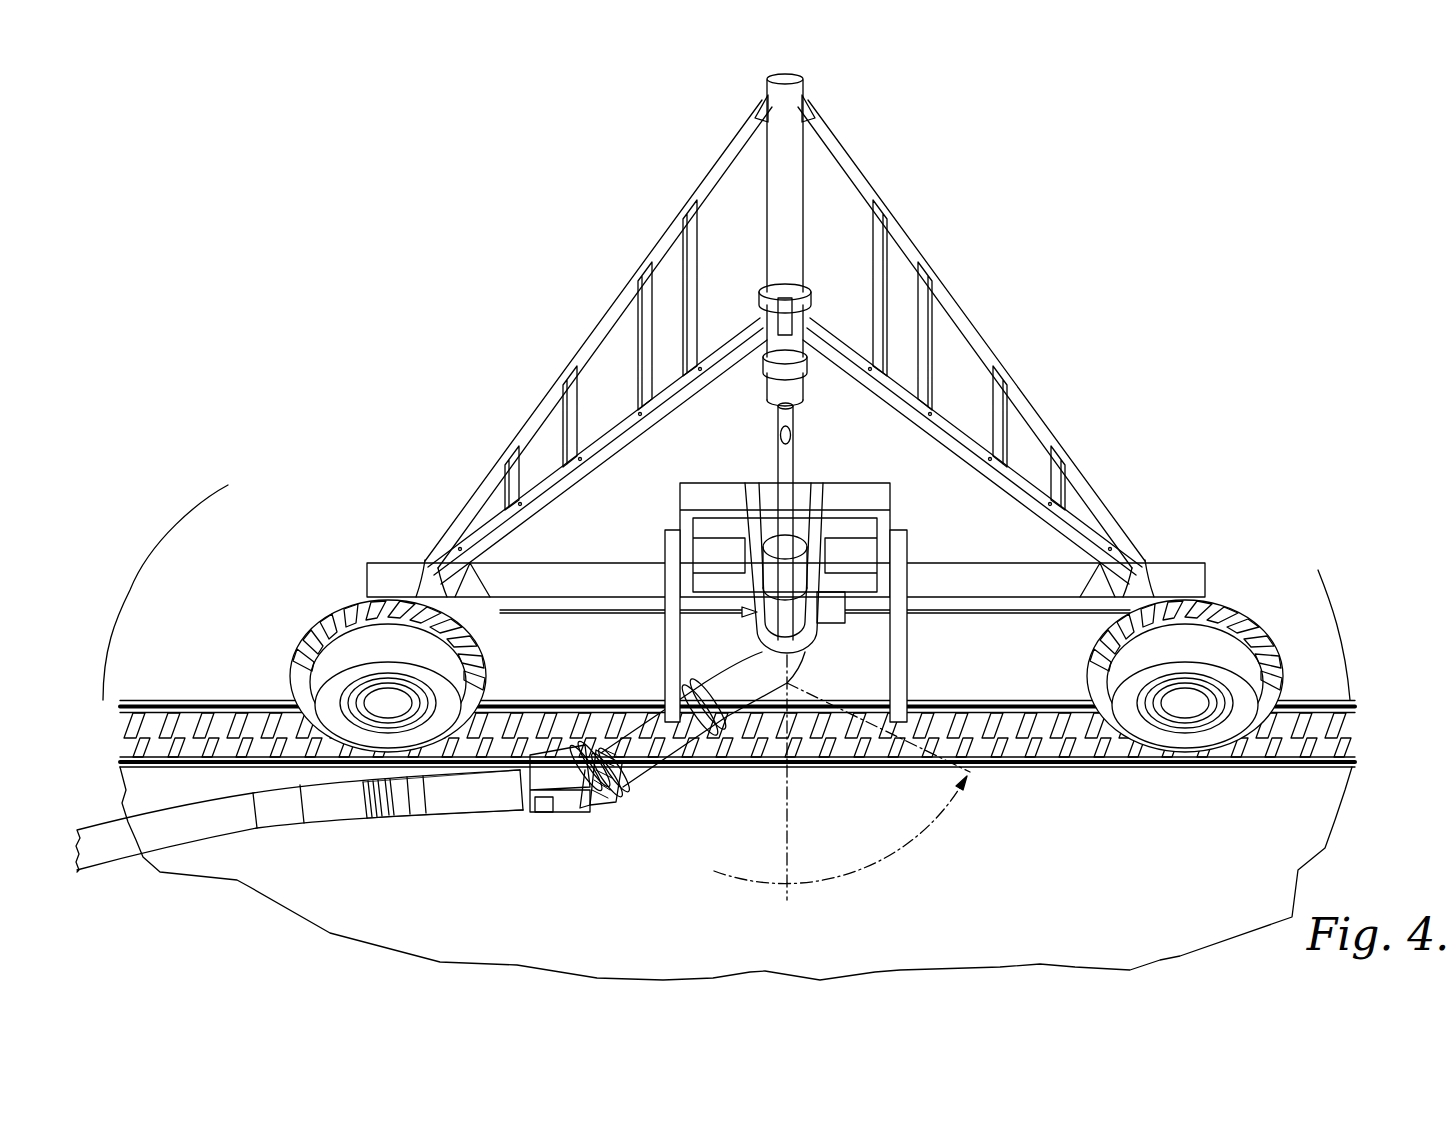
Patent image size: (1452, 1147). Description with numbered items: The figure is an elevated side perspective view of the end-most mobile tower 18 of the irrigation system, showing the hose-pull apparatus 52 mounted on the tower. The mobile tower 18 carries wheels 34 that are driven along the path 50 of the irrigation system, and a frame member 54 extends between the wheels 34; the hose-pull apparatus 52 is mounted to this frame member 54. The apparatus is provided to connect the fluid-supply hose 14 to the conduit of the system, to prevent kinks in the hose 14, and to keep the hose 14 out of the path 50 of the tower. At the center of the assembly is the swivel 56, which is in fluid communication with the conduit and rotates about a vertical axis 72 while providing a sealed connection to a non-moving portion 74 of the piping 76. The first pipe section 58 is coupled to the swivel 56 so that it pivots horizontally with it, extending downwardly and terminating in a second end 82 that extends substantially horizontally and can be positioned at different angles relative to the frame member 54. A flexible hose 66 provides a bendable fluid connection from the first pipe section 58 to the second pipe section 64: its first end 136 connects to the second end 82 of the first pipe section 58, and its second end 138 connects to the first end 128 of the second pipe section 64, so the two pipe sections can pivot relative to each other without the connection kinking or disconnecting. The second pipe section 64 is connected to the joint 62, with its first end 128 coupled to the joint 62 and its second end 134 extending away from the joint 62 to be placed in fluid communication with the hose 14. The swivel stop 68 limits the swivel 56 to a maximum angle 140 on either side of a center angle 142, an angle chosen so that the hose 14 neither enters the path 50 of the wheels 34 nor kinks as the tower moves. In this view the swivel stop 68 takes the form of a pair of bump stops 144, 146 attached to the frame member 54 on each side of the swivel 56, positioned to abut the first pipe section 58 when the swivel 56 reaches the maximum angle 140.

The fluid-supply hose 14 is at (196, 838).
The mobile tower 18 is at (877, 130).
The wheels 34 is at (322, 623).
The path 50 is at (247, 722).
The hose-pull apparatus 52 is at (518, 370).
The frame member 54 is at (1053, 597).
The swivel 56 is at (825, 471).
The first pipe section 58 is at (690, 695).
The joint 62 is at (600, 812).
The second pipe section 64 is at (452, 808).
The flexible hose 66 is at (573, 787).
The swivel stop 68 is at (928, 549).
The vertical axis 72 is at (785, 515).
The non-moving portion 74 is at (776, 538).
The piping 76 is at (786, 432).
The second end 82 is at (633, 772).
The first end 128 is at (512, 775).
The second end 134 is at (427, 807).
The first end 136 is at (600, 778).
The second end 138 is at (547, 790).
The maximum angle 140 is at (692, 747).
The center angle 142 is at (787, 845).
The bump stop 144 is at (672, 583).
The bump stop 146 is at (907, 680).